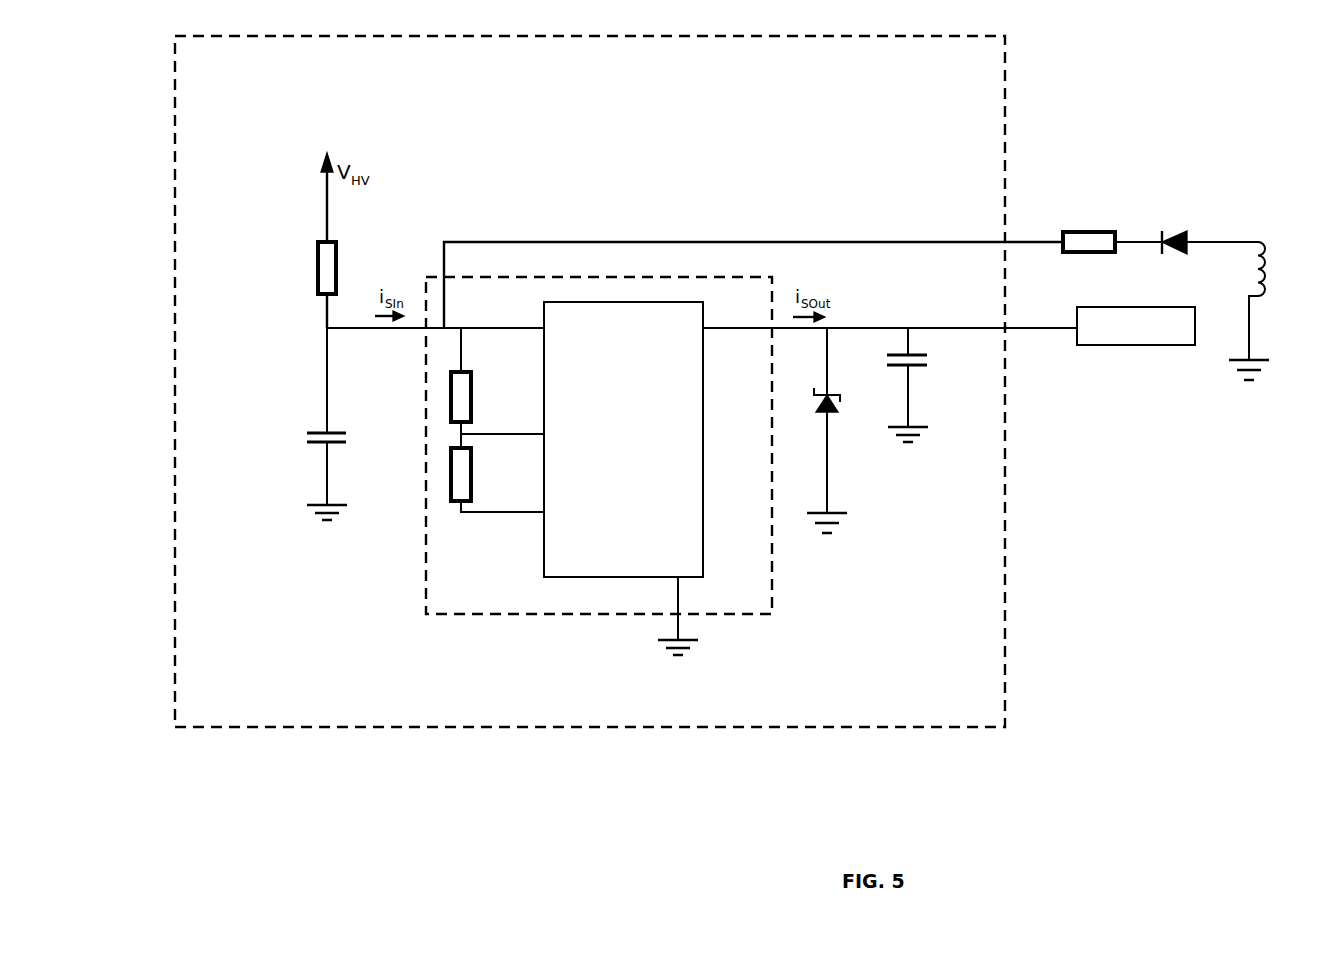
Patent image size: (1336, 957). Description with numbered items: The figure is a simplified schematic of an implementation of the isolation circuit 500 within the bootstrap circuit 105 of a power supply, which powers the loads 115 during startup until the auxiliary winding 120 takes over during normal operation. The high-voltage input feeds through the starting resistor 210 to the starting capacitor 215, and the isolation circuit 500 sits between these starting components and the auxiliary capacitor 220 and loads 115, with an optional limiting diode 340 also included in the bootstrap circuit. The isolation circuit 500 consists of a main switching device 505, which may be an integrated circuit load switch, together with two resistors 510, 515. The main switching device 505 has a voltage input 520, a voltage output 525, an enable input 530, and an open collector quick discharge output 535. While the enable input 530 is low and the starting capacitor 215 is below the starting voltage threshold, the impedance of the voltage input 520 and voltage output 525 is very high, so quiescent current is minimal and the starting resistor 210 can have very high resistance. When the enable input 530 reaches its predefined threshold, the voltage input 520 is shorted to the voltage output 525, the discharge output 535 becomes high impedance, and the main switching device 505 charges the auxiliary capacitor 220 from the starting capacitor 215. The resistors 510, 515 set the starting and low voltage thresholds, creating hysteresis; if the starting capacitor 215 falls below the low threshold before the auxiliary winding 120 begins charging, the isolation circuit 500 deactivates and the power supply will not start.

The bootstrap circuit 105 is at (175, 144).
The loads 115 is at (1148, 345).
The auxiliary winding 120 is at (1262, 297).
The starting resistor 210 is at (337, 272).
The starting capacitor 215 is at (310, 444).
The auxiliary capacitor 220 is at (918, 366).
The limiting diode 340 is at (822, 408).
The isolation circuit 500 is at (575, 277).
The main switching device 505 is at (543, 560).
The resistor 510 is at (472, 390).
The resistor 515 is at (472, 470).
The voltage input 520 is at (536, 328).
The voltage output 525 is at (710, 328).
The enable input 530 is at (540, 434).
The open collector quick discharge output 535 is at (540, 512).